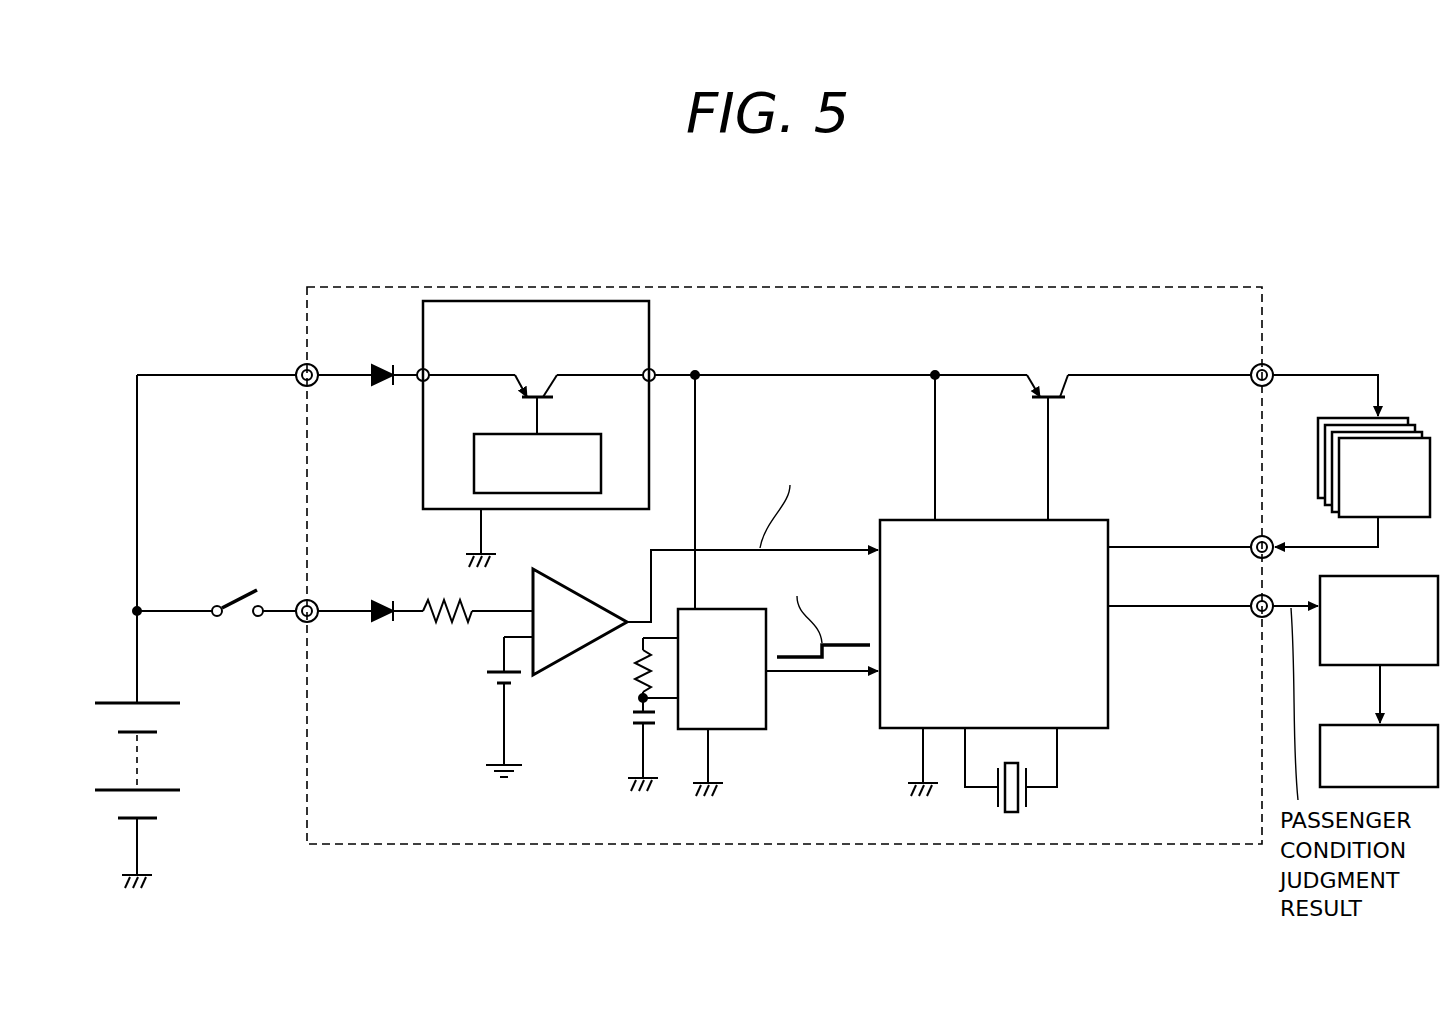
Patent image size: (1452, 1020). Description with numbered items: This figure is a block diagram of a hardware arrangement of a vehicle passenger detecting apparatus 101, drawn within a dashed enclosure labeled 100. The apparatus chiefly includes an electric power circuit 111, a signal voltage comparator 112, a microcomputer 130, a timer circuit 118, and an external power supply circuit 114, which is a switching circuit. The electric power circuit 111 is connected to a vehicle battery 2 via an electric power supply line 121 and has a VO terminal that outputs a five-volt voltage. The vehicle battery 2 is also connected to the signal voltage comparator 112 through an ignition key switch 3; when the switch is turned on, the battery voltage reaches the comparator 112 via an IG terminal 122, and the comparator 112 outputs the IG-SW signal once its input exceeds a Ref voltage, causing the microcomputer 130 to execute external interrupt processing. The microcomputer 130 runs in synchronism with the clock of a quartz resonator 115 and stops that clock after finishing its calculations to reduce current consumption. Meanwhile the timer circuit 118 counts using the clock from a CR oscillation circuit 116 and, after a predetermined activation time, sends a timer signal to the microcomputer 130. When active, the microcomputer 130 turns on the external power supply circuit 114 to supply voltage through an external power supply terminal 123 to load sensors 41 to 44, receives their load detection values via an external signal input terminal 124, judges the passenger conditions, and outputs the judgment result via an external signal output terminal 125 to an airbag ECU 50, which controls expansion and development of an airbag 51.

The vehicle battery 2 is at (167, 792).
The ignition key switch 3 is at (242, 596).
The load sensor 41 is at (1351, 461).
The load sensor 44 is at (1351, 461).
The airbag ECU 50 is at (1400, 575).
The airbag 51 is at (1400, 725).
The passenger condition judgment ECU 100 is at (457, 287).
The vehicle passenger detecting apparatus 101 is at (690, 214).
The electric power circuit 111 is at (423, 440).
The signal voltage comparator 112 is at (573, 590).
The external power supply circuit 114 is at (1047, 368).
The quartz resonator 115 is at (1030, 797).
The CR oscillation circuit 116 is at (626, 694).
The timer circuit 118 is at (766, 712).
The electric power supply line 121 is at (352, 370).
The IG terminal 122 is at (298, 600).
The external power supply terminal 123 is at (1254, 366).
The external signal input terminal 124 is at (1254, 540).
The external signal output terminal 125 is at (1255, 617).
The microcomputer 130 is at (983, 519).